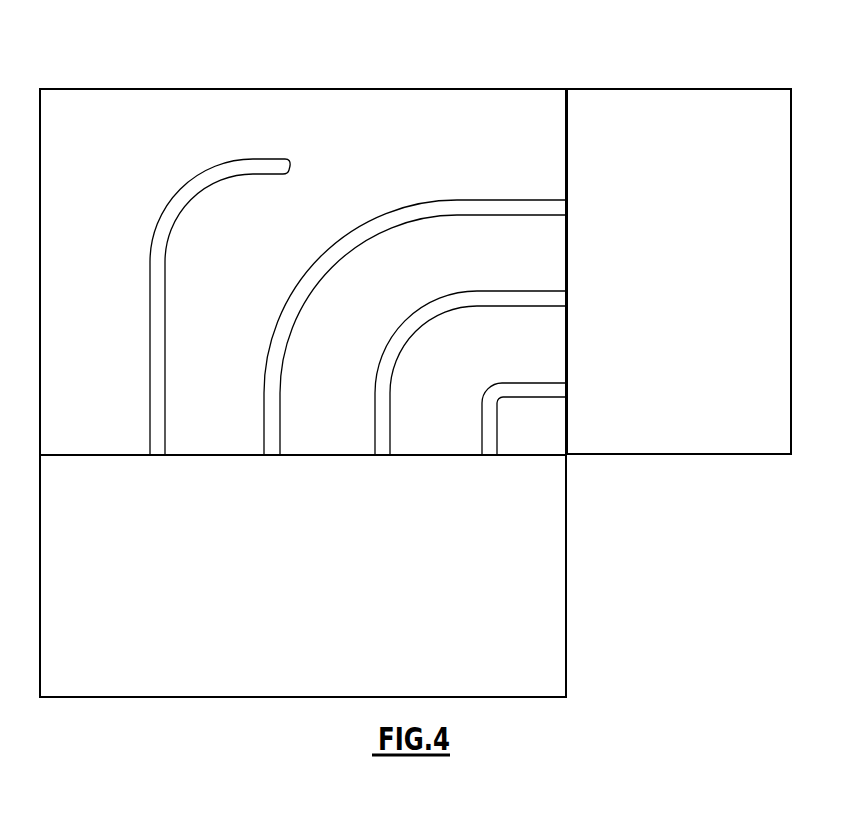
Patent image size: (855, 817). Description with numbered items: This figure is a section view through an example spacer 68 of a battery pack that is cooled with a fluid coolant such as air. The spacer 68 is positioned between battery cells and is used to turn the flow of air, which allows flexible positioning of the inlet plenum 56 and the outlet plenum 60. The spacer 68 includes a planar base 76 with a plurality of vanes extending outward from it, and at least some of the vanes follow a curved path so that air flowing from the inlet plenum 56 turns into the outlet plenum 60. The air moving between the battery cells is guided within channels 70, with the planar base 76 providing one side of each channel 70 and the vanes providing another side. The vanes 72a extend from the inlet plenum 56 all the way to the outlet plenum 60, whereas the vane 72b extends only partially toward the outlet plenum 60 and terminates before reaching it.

The inlet plenum 56 is at (318, 594).
The outlet plenum 60 is at (693, 300).
The spacer 68 is at (690, 75).
The channel 70 is at (397, 453).
The vane 72a is at (292, 320).
The vane 72b is at (170, 217).
The planar base 76 is at (504, 110).